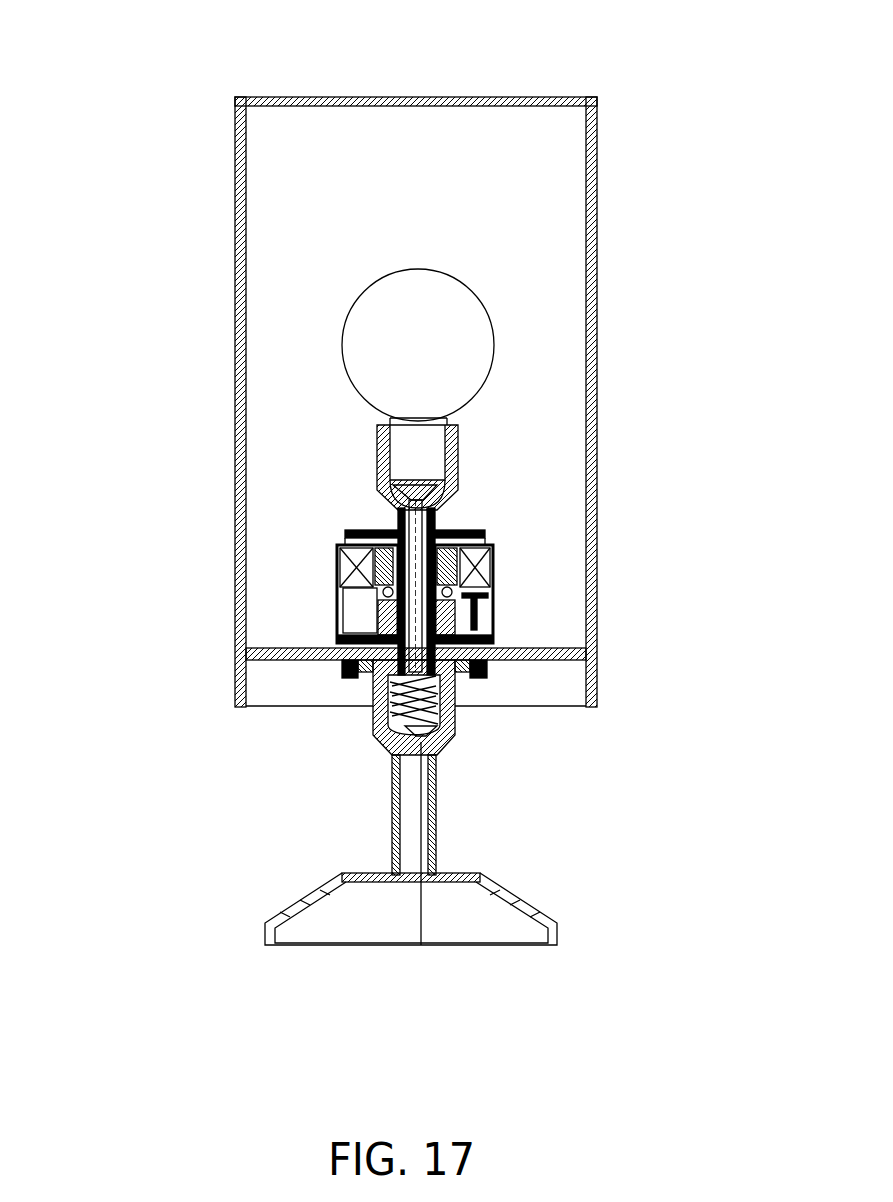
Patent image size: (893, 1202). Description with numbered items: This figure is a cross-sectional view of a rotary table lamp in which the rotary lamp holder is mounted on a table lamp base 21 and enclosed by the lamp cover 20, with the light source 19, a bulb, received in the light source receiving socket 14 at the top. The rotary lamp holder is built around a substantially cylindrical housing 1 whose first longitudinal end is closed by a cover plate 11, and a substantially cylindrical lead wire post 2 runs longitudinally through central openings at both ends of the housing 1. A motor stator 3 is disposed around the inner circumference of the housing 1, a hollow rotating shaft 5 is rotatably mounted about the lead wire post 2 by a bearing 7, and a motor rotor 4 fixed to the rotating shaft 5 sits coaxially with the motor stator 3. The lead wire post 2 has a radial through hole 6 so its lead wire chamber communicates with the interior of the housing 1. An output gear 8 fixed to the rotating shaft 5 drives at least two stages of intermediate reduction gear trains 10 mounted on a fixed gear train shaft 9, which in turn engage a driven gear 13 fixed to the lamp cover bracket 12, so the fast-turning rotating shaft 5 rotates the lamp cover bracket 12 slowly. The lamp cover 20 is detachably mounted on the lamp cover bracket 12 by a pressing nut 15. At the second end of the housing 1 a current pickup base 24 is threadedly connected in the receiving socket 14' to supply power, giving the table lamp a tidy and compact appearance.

The housing 1 is at (400, 497).
The lead wire post 2 is at (392, 535).
The motor stator 3 is at (347, 550).
The motor rotor 4 is at (350, 572).
The rotating shaft 5 is at (385, 582).
The radial through hole 6 is at (437, 530).
The bearing 7 is at (378, 592).
The output gear 8 is at (494, 547).
The gear train shaft 9 is at (478, 608).
The intermediate reduction gear trains 10 is at (540, 662).
The cover plate 11 is at (505, 662).
The lamp cover bracket 12 is at (483, 680).
The driven gear 13 is at (460, 680).
The light source receiving socket 14 is at (485, 255).
The receiving socket 14' is at (350, 898).
The pressing nut 15 is at (348, 672).
The light source 19 is at (418, 348).
The lamp cover 20 is at (250, 147).
The table lamp base 21 is at (293, 932).
The current pickup base 24 is at (421, 945).